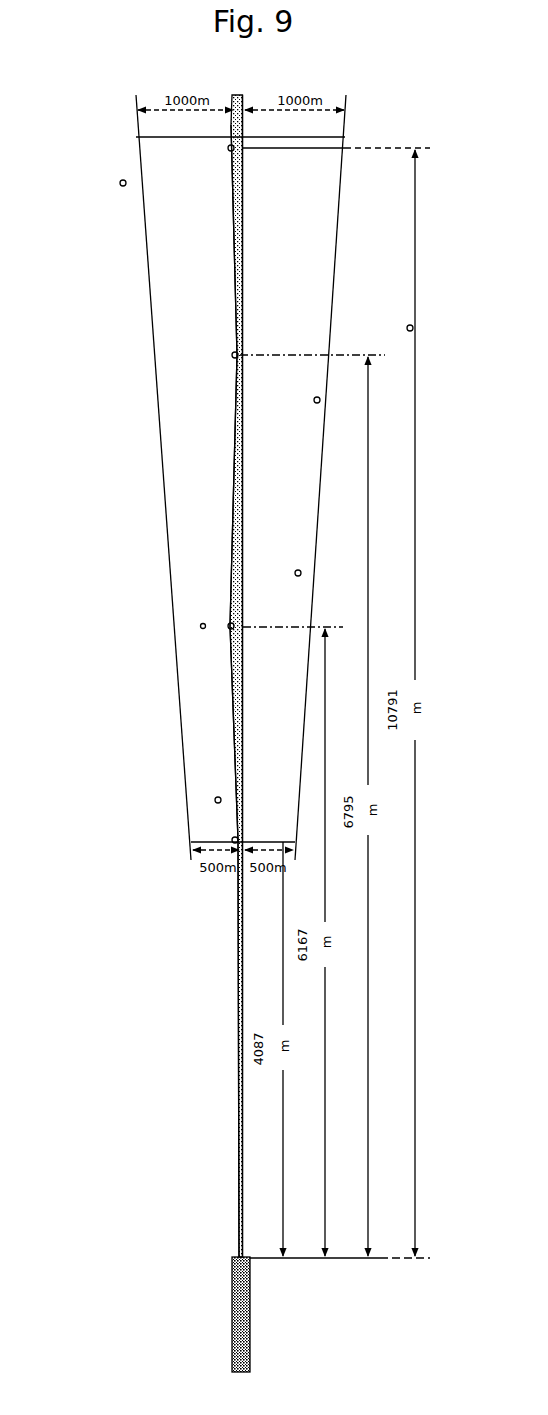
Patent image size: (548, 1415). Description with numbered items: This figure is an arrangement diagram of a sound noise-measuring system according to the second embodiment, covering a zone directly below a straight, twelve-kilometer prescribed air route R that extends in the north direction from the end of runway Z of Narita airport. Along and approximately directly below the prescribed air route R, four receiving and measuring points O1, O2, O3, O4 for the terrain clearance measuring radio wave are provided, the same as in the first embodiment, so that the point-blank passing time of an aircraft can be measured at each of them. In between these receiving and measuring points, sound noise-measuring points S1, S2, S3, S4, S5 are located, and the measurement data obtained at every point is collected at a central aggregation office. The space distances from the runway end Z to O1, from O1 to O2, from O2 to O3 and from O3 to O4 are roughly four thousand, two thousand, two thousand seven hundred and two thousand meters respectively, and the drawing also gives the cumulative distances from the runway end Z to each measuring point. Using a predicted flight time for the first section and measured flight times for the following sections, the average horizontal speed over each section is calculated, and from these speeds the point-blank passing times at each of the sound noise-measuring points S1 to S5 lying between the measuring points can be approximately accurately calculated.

The prescribed air route R is at (240, 1042).
The end of runway Z is at (250, 1258).
The point-blank passing time-measuring point O1 is at (232, 838).
The point-blank passing time-measuring point O2 is at (203, 622).
The point-blank passing time-measuring point O3 is at (233, 352).
The point-blank passing time-measuring point O4 is at (228, 150).
The sound noise-measuring point S1 is at (216, 796).
The sound noise-measuring point S2 is at (295, 566).
The sound noise-measuring point S3 is at (313, 408).
The sound noise-measuring point S4 is at (414, 327).
The sound noise-measuring point S5 is at (119, 186).